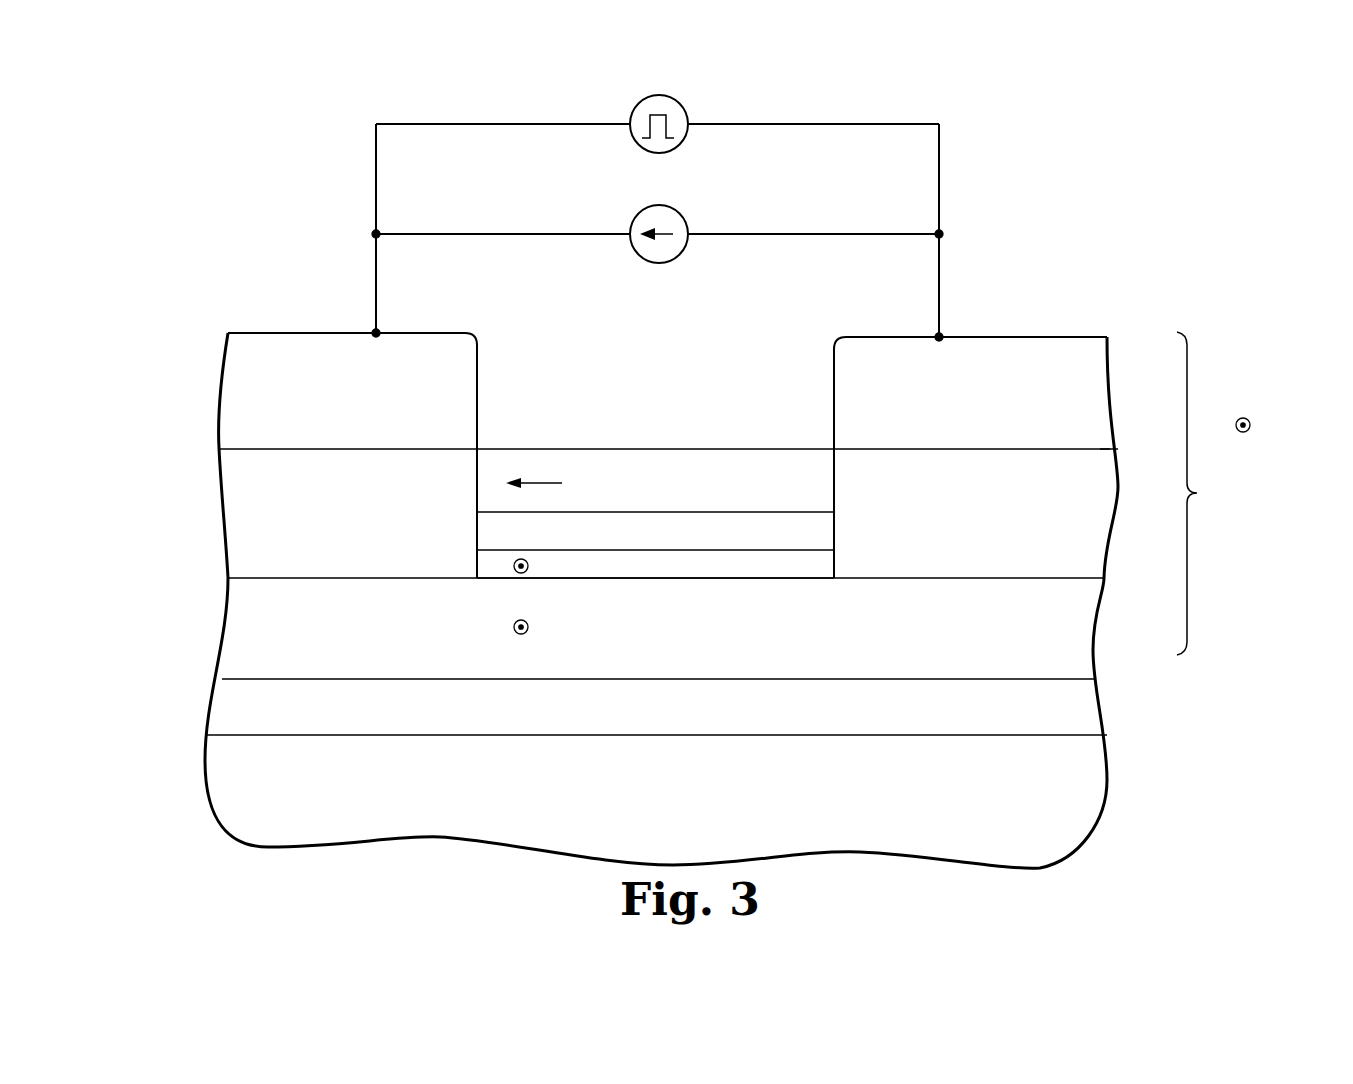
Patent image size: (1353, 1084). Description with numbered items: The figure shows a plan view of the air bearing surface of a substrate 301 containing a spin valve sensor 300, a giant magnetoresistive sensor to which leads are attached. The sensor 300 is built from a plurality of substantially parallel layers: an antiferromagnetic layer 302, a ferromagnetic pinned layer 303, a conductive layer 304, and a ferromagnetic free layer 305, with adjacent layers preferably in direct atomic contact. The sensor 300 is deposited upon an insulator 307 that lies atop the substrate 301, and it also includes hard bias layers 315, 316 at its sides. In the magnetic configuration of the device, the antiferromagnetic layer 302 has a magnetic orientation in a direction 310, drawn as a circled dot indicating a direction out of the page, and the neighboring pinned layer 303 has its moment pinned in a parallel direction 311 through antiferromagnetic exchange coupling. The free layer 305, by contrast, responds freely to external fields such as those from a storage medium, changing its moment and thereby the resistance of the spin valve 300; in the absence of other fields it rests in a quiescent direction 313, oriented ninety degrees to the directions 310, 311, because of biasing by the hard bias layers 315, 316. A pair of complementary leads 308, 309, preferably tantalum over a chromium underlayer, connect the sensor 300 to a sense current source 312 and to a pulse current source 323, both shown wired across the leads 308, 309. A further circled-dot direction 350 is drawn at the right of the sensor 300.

The spin valve sensor 300 is at (1210, 493).
The substrate 301 is at (1092, 777).
The antiferromagnetic layer 302 is at (1088, 649).
The ferromagnetic pinned layer 303 is at (820, 568).
The conductive layer 304 is at (820, 535).
The ferromagnetic free layer 305 is at (820, 493).
The insulator 307 is at (1090, 713).
The lead 308 is at (236, 403).
The lead 309 is at (1096, 409).
The direction of magnetic orientation of antiferromagnetic layer 310 is at (529, 627).
The pinned direction of pinned layer moment 311 is at (529, 566).
The sense current source 312 is at (681, 218).
The quiescent magnetization direction of free layer 313 is at (540, 483).
The hard bias layer 315 is at (236, 513).
The hard bias layer 316 is at (1104, 522).
The pulse current source 323 is at (681, 108).
The magnetic field direction 350 is at (1251, 425).